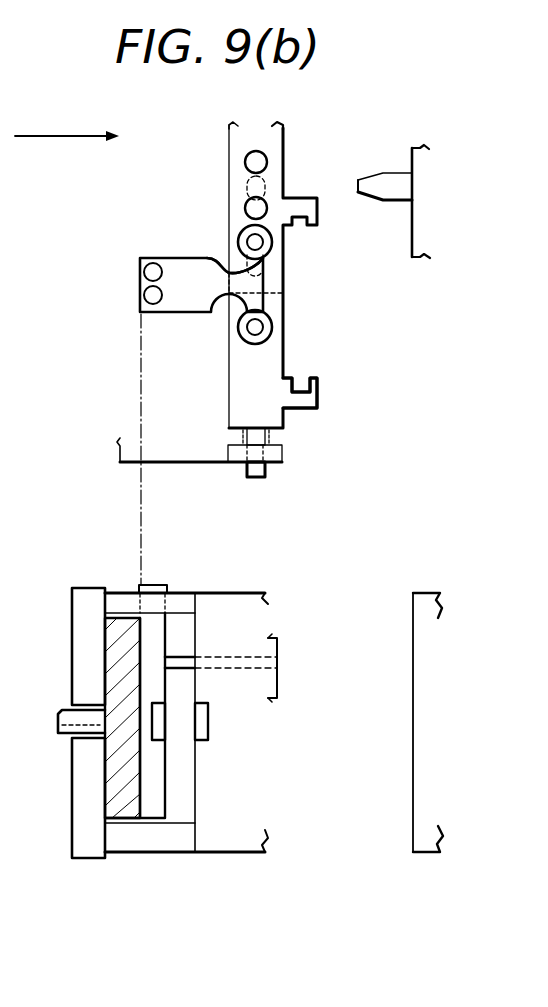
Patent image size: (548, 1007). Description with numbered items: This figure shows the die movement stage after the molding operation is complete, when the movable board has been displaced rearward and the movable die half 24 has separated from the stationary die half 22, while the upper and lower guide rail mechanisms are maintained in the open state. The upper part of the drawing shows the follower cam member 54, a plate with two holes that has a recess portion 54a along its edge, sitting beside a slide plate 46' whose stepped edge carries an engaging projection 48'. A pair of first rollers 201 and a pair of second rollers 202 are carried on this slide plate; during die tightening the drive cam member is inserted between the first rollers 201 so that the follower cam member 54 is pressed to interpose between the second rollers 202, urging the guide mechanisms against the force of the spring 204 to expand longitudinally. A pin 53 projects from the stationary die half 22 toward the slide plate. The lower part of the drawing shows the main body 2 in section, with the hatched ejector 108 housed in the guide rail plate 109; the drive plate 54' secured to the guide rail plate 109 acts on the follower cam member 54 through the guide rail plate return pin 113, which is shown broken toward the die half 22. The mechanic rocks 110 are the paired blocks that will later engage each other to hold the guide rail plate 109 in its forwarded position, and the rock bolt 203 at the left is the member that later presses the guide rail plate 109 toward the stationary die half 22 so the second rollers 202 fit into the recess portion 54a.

The main body 2 is at (252, 755).
The stationary die half 22 is at (423, 183).
The movable die half 24 is at (165, 410).
The slide plate 46' is at (284, 275).
The engaging projection 48' is at (321, 414).
The pin 53 is at (390, 193).
The follower cam member 54 is at (201, 308).
The recess portion 54a is at (224, 267).
The drive plate 54' is at (121, 579).
The ejector 108 is at (133, 787).
The guide rail plate 109 is at (160, 638).
The mechanic rocks 110 is at (160, 713).
The guide rail plate return pin 113 is at (237, 657).
The first rollers 201 is at (241, 206).
The second rollers 202 is at (272, 245).
The rock bolt 203 is at (75, 717).
The spring 204 is at (283, 442).